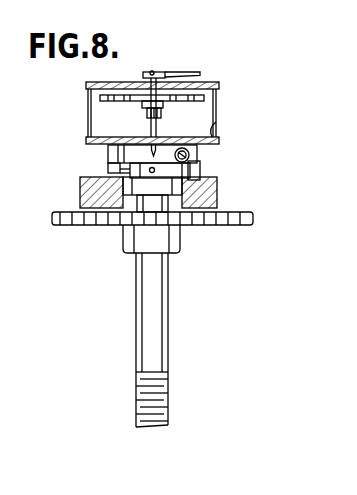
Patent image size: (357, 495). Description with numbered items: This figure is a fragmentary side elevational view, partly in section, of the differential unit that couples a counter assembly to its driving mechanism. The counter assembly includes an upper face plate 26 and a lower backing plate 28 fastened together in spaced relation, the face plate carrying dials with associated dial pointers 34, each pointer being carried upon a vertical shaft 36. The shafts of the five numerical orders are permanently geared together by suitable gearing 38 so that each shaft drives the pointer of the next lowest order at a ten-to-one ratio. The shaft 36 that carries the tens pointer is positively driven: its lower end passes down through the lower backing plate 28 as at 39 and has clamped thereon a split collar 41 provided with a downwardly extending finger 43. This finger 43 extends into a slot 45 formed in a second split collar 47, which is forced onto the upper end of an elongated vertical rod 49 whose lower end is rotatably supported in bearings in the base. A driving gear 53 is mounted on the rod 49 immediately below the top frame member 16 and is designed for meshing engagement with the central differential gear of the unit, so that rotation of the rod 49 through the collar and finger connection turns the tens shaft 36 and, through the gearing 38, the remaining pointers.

The top frame member 16 is at (80, 184).
The upper face plate 26 is at (214, 85).
The lower backing plate 28 is at (217, 121).
The dial pointer 34 is at (170, 74).
The vertical shaft 36 is at (160, 128).
The gearing 38 is at (92, 96).
The lower end of the shaft 39 is at (151, 150).
The split collar 41 is at (198, 154).
The finger 43 is at (124, 160).
The slot 45 is at (108, 170).
The second split collar 47 is at (200, 170).
The elongated vertical rod 49 is at (169, 298).
The driving gear 53 is at (211, 226).